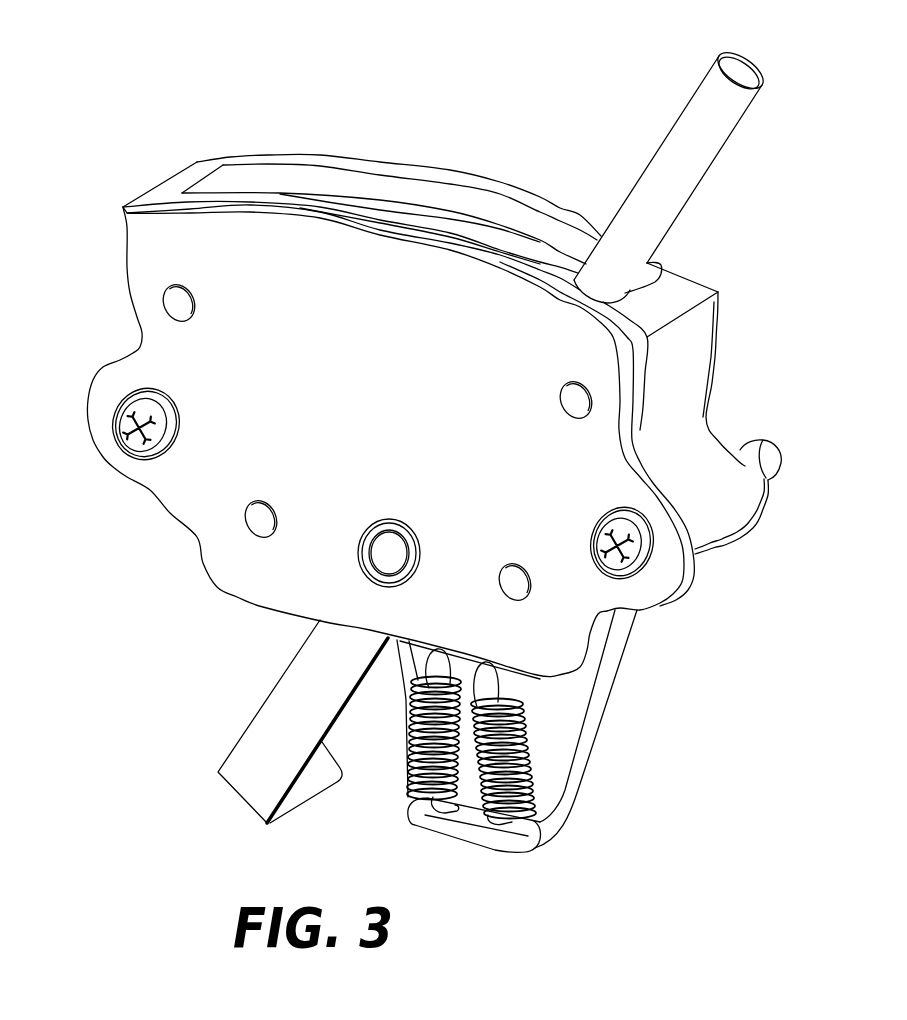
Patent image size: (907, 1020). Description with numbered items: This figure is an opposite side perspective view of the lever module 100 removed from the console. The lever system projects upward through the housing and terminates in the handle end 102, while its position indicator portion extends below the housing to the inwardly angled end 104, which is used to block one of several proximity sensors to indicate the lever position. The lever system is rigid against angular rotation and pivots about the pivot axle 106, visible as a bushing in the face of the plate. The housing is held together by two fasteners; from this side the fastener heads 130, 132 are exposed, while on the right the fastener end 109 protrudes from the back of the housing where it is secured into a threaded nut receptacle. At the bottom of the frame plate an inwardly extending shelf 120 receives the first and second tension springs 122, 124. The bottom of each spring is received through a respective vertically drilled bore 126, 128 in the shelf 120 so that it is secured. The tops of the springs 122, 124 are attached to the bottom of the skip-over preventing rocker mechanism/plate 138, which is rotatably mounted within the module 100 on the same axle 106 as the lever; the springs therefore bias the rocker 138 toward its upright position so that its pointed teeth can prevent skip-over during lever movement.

The module 100 is at (508, 88).
The handle end 102 is at (680, 120).
The inwardly angled end 104 is at (318, 776).
The pivot axle 106 is at (380, 555).
The fastener end 109 is at (783, 443).
The inwardly extending shelf 120 is at (480, 823).
The first tension spring 122 is at (527, 750).
The second tension spring 124 is at (407, 765).
The vertically drilled bore 126 is at (502, 823).
The vertically drilled bore 128 is at (448, 813).
The fastener head 130 is at (630, 560).
The fastener head 132 is at (147, 453).
The skip-over preventing rocker mechanism/plate 138 is at (508, 672).